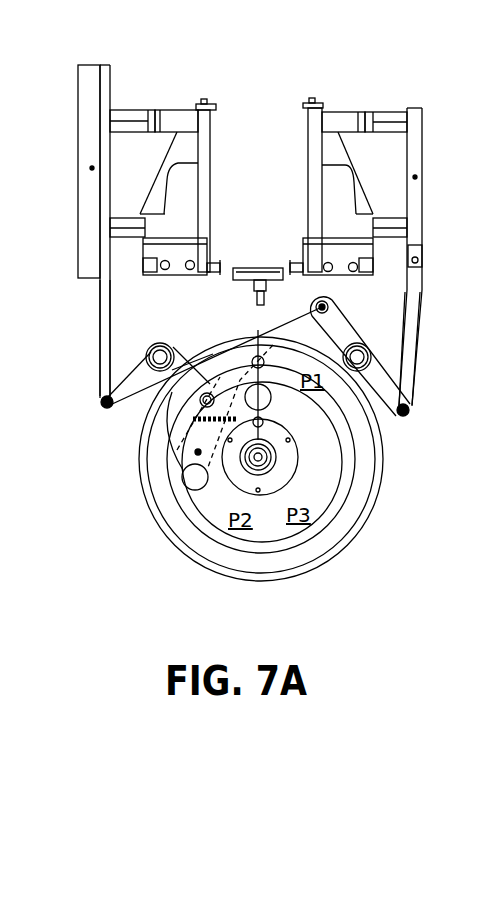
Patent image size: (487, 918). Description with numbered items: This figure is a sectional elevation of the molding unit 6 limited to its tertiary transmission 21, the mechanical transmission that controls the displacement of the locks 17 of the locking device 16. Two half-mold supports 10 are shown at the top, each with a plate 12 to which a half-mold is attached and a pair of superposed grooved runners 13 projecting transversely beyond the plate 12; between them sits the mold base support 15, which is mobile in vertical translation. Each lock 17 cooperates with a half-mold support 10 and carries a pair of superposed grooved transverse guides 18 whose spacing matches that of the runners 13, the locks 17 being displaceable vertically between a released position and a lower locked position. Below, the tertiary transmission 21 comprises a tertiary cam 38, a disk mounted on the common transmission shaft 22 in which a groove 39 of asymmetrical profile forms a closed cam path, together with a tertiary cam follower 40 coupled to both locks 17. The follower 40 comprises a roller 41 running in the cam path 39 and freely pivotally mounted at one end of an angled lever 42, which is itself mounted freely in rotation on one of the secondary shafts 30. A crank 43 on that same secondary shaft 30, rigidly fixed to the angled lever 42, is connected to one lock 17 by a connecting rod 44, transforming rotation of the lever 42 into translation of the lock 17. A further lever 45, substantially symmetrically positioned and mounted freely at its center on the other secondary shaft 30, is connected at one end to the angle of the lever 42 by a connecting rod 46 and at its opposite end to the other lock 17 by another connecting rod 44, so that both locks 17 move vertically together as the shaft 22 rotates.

The molding unit 6 is at (261, 58).
The half-mold support 10 is at (177, 292).
The plate 12 is at (211, 140).
The grooved runners 13 is at (178, 120).
The mold base support 15 is at (245, 268).
The locking device 16 is at (431, 104).
The lock 17 is at (88, 167).
The grooved transverse guides 18 is at (122, 112).
The tertiary transmission 21 is at (108, 437).
The transmission shaft 22 is at (259, 462).
The secondary shaft 30 is at (150, 357).
The tertiary cam 38 is at (333, 532).
The groove 39 is at (352, 492).
The tertiary cam follower 40 is at (196, 522).
The roller 41 is at (196, 482).
The angled lever 42 is at (177, 450).
The crank 43 is at (113, 384).
The connecting rod 44 is at (100, 300).
The further lever 45 is at (383, 410).
The connecting rod 46 is at (283, 337).